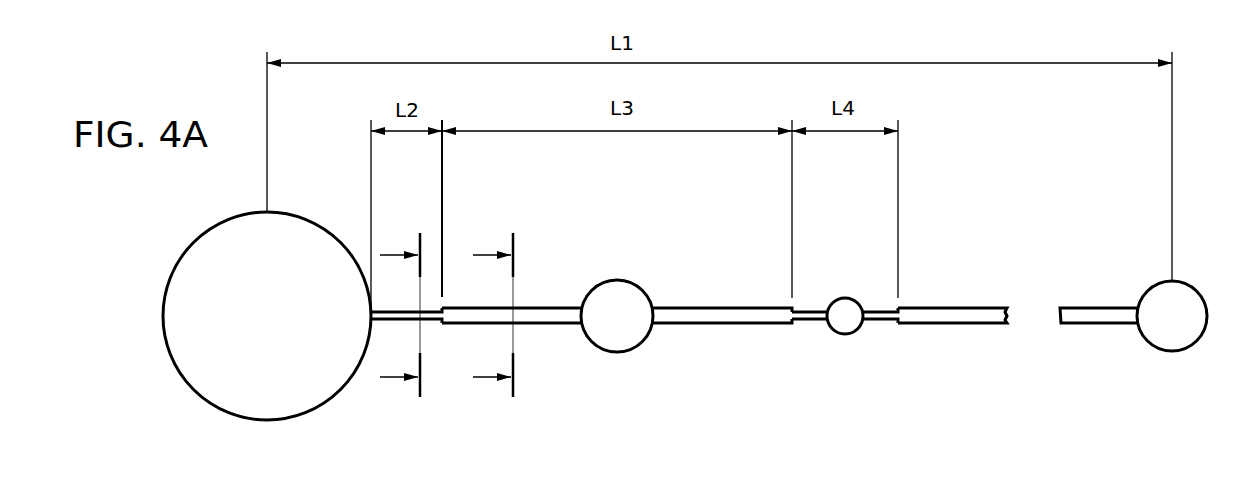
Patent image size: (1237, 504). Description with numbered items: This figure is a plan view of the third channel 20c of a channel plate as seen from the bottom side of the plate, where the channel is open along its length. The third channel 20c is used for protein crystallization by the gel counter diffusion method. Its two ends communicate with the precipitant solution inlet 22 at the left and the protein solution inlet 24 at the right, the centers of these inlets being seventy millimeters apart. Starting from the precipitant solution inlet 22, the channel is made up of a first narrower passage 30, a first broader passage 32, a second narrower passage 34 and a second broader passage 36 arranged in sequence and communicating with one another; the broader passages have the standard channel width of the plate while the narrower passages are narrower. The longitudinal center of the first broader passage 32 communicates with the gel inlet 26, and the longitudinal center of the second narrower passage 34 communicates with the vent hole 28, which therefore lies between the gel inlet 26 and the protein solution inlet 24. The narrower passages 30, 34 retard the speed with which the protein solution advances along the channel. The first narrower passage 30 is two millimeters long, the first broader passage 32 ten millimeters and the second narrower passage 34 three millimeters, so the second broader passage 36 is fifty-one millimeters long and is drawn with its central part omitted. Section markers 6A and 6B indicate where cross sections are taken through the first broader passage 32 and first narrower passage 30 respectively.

The third channel 20c is at (958, 265).
The precipitant solution inlet 22 is at (268, 421).
The protein solution inlet 24 is at (1172, 352).
The gel inlet 26 is at (618, 352).
The vent hole 28 is at (847, 334).
The first narrower passage 30 is at (388, 322).
The first broader passage 32 is at (708, 324).
The second narrower passage 34 is at (812, 324).
The second broader passage 36 is at (953, 324).
The section line 6A is at (500, 317).
The section line 6B is at (407, 317).